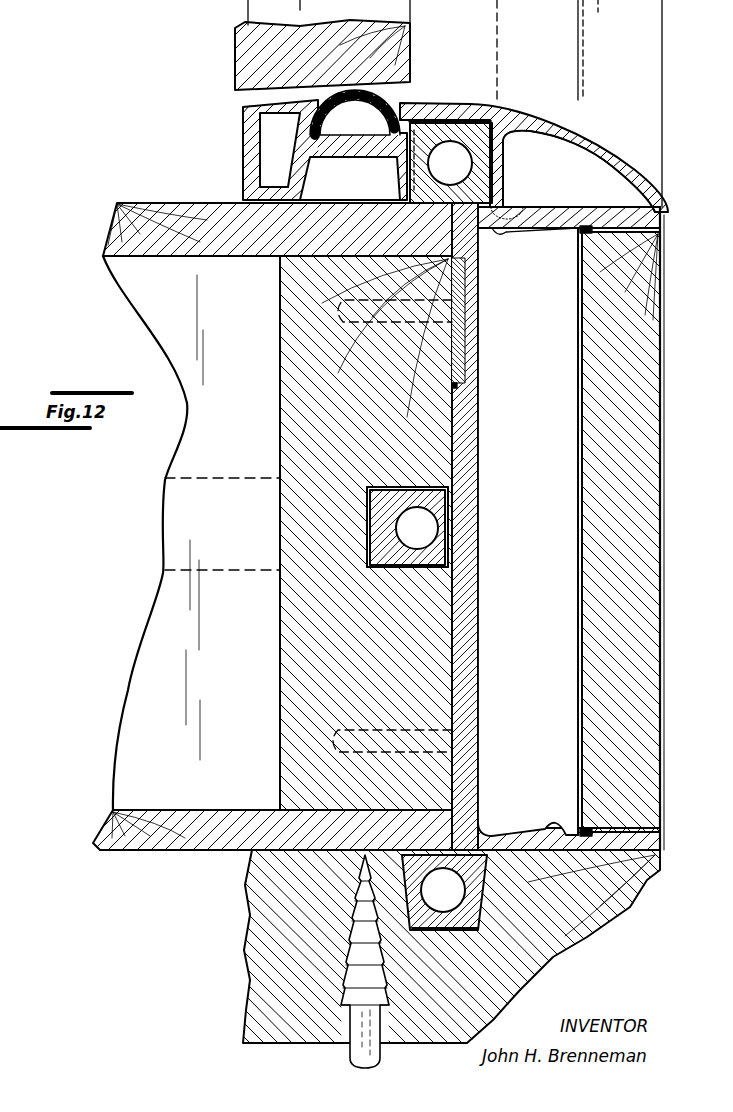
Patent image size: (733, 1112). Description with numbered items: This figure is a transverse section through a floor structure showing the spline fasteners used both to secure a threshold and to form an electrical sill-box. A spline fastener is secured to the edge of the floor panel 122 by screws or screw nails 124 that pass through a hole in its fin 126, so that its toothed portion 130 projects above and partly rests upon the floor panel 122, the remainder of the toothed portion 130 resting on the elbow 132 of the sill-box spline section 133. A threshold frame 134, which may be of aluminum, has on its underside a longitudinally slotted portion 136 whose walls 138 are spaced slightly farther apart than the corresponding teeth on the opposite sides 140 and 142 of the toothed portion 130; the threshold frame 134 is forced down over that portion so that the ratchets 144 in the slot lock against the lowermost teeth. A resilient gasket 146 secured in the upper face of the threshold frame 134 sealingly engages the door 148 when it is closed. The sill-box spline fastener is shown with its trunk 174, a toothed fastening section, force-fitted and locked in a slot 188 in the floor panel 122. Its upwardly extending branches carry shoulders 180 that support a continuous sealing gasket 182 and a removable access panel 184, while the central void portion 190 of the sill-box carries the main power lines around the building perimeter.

The floor panel 122 is at (283, 277).
The screws or screw nails 124 is at (400, 332).
The fin 126 is at (465, 275).
The toothed portion 130 is at (499, 101).
The elbow 132 is at (497, 232).
The sill-box spline section 133 is at (479, 400).
The threshold frame 134 is at (587, 140).
The longitudinally slotted portion 136 is at (455, 120).
The walls 138 is at (407, 171).
The opposite side 140 is at (451, 206).
The opposite side 142 is at (480, 188).
The ratchets 144 is at (504, 192).
The resilient gasket 146 is at (395, 90).
The door 148 is at (407, 32).
The trunk 174 is at (410, 482).
The shoulders 180 is at (580, 238).
The continuous sealing gasket 182 is at (578, 646).
The removable access panel 184 is at (580, 544).
The slot 188 is at (378, 488).
The central void portion 190 is at (531, 487).